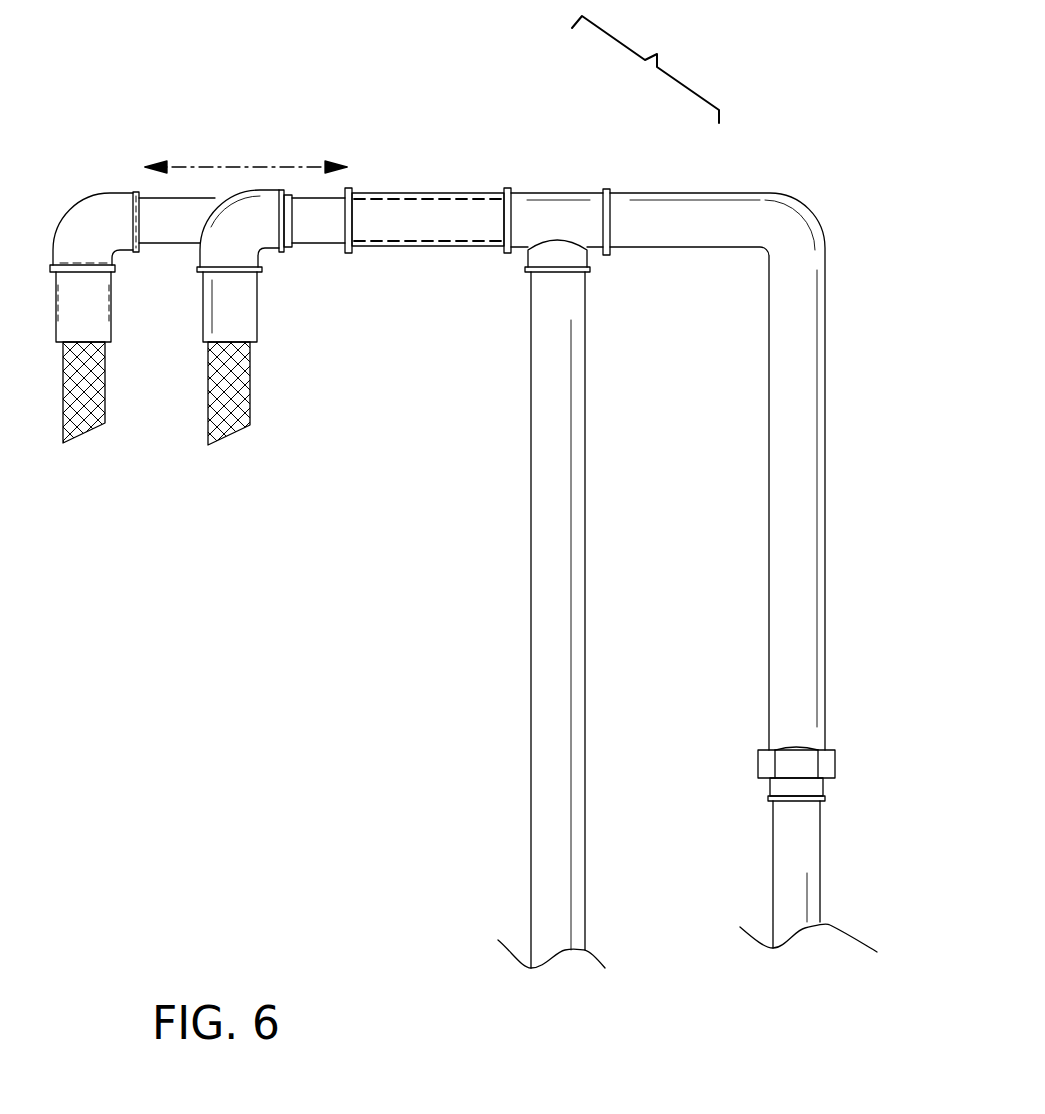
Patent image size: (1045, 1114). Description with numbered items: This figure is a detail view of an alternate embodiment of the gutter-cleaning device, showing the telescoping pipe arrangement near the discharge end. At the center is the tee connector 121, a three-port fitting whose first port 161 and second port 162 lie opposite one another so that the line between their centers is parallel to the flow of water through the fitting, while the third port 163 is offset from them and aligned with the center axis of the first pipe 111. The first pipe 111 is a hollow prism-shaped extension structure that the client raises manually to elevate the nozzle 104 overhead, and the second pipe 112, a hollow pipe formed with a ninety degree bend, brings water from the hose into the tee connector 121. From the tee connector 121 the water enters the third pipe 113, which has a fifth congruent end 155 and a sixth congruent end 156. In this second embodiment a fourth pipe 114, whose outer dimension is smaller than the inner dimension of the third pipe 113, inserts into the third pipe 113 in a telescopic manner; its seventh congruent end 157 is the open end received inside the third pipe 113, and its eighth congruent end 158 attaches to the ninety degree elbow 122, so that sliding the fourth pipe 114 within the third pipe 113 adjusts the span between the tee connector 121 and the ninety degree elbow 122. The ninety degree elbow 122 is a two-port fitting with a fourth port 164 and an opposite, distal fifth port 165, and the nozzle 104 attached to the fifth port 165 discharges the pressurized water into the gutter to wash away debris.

The nozzle 104 is at (201, 322).
The first pipe 111 is at (825, 533).
The second pipe 112 is at (563, 482).
The third pipe 113 is at (422, 192).
The fourth pipe 114 is at (325, 235).
The tee connector 121 is at (657, 58).
The 90 degree elbow 122 is at (227, 207).
The fifth congruent end 155 is at (504, 188).
The sixth congruent end 156 is at (352, 190).
The seventh congruent end 157 is at (500, 219).
The eighth congruent end 158 is at (292, 221).
The first port 161 is at (604, 189).
The second port 162 is at (565, 247).
The third port 163 is at (516, 211).
The fourth port 164 is at (279, 222).
The fifth port 165 is at (215, 262).